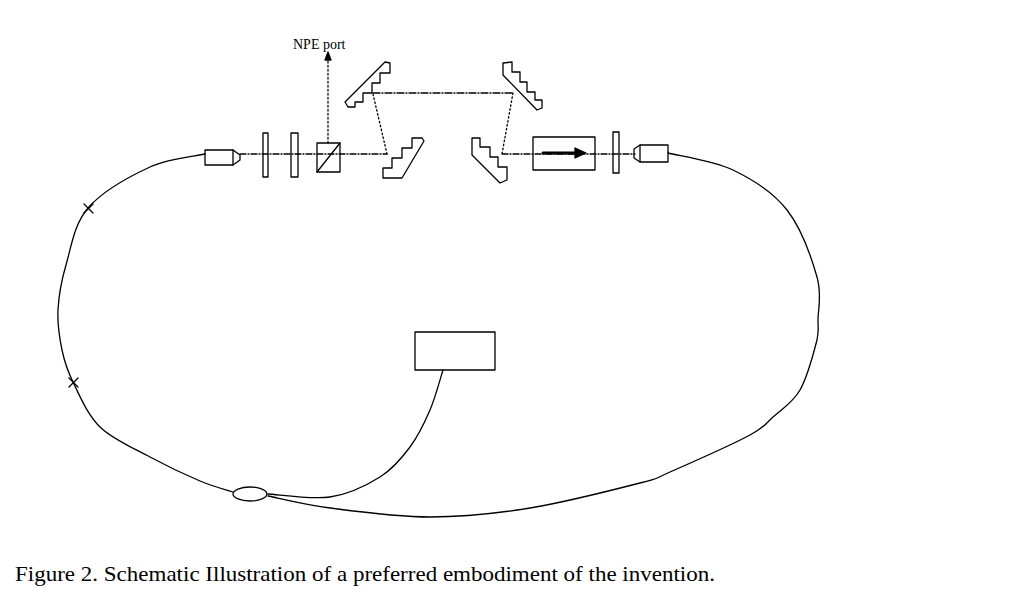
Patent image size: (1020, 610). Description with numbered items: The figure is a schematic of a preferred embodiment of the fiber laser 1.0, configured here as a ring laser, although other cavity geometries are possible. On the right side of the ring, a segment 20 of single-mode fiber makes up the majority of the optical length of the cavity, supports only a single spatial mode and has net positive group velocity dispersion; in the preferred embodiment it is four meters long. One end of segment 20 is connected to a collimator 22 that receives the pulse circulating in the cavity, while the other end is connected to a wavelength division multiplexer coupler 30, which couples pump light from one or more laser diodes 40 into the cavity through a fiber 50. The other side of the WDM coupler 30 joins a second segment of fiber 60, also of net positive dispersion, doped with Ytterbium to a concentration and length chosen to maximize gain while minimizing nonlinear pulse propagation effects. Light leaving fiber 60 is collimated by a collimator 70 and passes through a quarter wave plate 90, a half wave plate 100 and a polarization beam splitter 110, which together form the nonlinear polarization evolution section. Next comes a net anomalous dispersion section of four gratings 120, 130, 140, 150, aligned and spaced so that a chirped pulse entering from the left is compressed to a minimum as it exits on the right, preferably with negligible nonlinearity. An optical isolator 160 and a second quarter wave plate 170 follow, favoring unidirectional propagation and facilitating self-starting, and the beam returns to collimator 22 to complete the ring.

The fiber laser 1.0 is at (133, 128).
The segment 20 is at (818, 300).
The collimator 22 is at (653, 145).
The wavelength division multiplexer coupler 30 is at (247, 502).
The laser diodes 40 is at (496, 350).
The fiber 50 is at (412, 443).
The second segment of fiber 60 is at (152, 457).
The collimator 70 is at (212, 165).
The quarter wave plate 90 is at (262, 135).
The half wave plate 100 is at (293, 178).
The polarization beam splitter 110 is at (340, 172).
The grating 120 is at (410, 165).
The grating 130 is at (388, 60).
The grating 140 is at (523, 70).
The grating 150 is at (500, 183).
The optical isolator 160 is at (535, 137).
The second quarter wave plate 170 is at (618, 173).